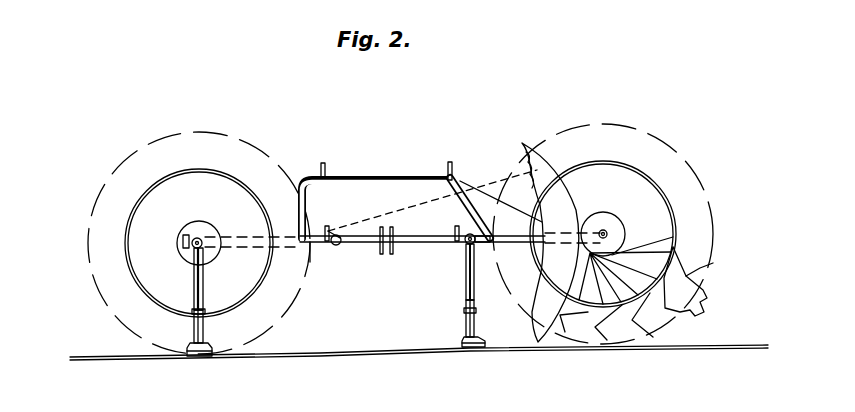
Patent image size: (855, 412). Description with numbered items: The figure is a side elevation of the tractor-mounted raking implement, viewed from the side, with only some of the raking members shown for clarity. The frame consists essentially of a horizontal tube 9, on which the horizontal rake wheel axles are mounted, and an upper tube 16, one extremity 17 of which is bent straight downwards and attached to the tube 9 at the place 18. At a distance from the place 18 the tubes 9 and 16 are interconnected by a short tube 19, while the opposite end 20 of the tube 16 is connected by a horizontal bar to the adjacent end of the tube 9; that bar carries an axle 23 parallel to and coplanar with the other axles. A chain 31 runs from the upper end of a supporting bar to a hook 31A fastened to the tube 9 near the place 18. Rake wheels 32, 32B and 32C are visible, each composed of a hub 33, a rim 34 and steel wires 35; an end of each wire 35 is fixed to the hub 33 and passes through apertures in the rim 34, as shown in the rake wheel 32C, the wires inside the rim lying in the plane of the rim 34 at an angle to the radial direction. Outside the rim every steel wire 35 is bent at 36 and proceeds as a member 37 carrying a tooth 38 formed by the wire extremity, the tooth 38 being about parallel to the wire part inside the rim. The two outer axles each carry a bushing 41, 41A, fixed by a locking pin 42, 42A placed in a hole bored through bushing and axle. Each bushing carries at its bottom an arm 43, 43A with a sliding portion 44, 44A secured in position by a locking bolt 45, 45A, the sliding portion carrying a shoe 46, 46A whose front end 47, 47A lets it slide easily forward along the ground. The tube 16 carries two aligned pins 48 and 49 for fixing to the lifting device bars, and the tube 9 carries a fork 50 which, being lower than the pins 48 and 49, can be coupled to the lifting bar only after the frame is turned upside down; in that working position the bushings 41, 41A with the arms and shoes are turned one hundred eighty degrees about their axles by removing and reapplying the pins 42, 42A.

The horizontal tube 9 is at (441, 244).
The tube 16 is at (358, 178).
The extremity of tube 17 is at (312, 195).
The attachment place 18 is at (310, 248).
The short tube 19 is at (468, 214).
The end of tube 20 is at (525, 205).
The axle 23 is at (608, 234).
The chain 31 is at (410, 210).
The hook 31A is at (336, 234).
The rake wheel 32 is at (92, 270).
The rake wheel 32B is at (540, 345).
The rake wheel 32C is at (670, 162).
The hub 33 is at (606, 220).
The rim 34 is at (659, 192).
The steel wires 35 is at (641, 253).
The bend 36 is at (672, 245).
The member 37 is at (708, 261).
The tooth 38 is at (696, 305).
The bushing 41 is at (204, 240).
The bushing 41A is at (458, 234).
The locking pin 42 is at (218, 245).
The locking pin 42A is at (479, 243).
The arm 43 is at (204, 275).
The arm 43A is at (475, 276).
The sliding portion 44 is at (206, 327).
The sliding portion 44A is at (474, 305).
The locking bolt 45 is at (194, 318).
The locking bolt 45A is at (464, 312).
The shoe 46 is at (192, 356).
The shoe 46A is at (472, 349).
The front end of shoe 47 is at (210, 355).
The front end of shoe 47A is at (477, 320).
The pin 48 is at (321, 173).
The pin 49 is at (454, 176).
The fork 50 is at (386, 254).